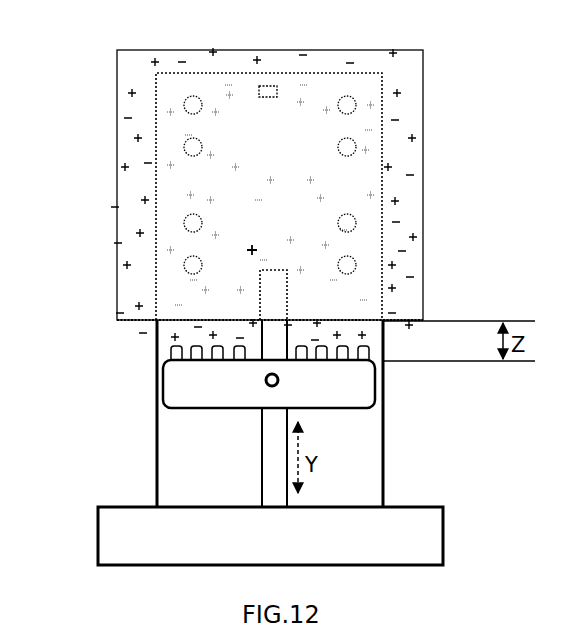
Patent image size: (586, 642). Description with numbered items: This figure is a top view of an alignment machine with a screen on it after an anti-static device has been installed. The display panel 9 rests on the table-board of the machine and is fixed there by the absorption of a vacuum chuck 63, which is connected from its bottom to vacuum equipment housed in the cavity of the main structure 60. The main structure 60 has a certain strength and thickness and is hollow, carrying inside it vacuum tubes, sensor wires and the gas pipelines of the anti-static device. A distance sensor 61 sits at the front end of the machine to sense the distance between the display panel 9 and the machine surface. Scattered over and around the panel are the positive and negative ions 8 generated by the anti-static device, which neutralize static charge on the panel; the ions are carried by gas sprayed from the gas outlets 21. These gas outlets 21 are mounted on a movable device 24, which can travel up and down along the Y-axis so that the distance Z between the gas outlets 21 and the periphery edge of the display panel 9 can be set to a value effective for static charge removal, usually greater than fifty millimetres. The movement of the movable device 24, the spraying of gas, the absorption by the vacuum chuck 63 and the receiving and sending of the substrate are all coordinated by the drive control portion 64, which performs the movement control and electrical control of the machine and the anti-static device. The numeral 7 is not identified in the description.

The insulating substrate 7 is at (132, 91).
The display panel 9 is at (125, 188).
The positive and negative ions 8 is at (203, 196).
The distance sensor 61 is at (268, 86).
The vacuum chuck 63 is at (356, 100).
The gas outlet 21 is at (366, 352).
The movable device 24 is at (367, 389).
The main structure 60 is at (167, 440).
The drive control portion 64 is at (430, 522).